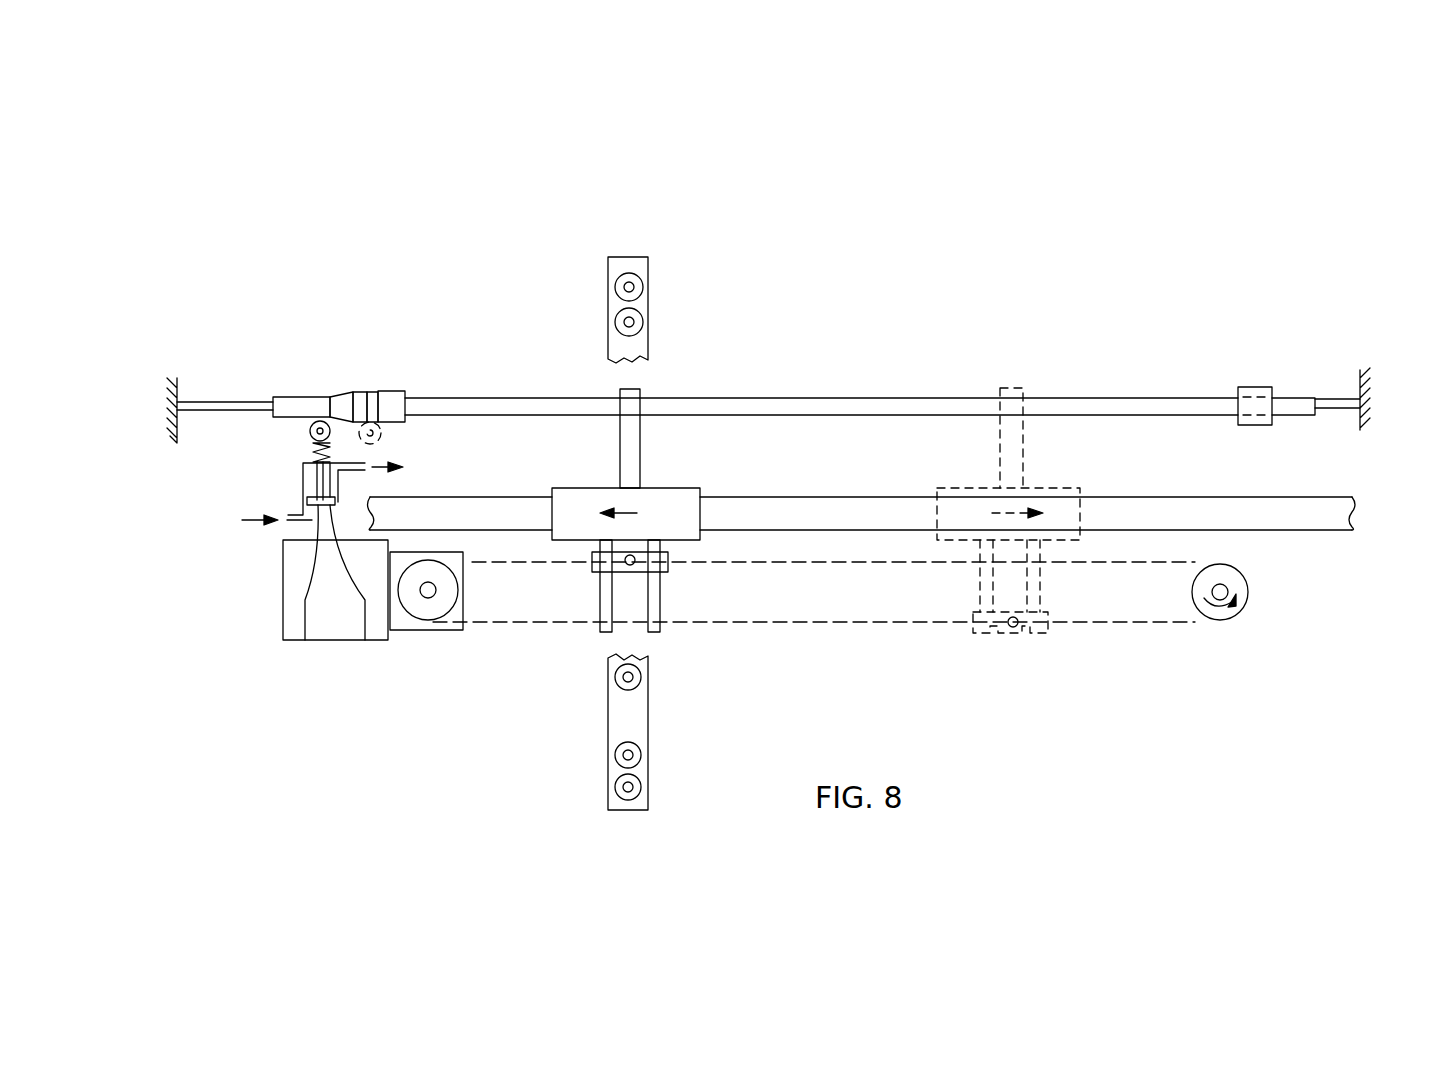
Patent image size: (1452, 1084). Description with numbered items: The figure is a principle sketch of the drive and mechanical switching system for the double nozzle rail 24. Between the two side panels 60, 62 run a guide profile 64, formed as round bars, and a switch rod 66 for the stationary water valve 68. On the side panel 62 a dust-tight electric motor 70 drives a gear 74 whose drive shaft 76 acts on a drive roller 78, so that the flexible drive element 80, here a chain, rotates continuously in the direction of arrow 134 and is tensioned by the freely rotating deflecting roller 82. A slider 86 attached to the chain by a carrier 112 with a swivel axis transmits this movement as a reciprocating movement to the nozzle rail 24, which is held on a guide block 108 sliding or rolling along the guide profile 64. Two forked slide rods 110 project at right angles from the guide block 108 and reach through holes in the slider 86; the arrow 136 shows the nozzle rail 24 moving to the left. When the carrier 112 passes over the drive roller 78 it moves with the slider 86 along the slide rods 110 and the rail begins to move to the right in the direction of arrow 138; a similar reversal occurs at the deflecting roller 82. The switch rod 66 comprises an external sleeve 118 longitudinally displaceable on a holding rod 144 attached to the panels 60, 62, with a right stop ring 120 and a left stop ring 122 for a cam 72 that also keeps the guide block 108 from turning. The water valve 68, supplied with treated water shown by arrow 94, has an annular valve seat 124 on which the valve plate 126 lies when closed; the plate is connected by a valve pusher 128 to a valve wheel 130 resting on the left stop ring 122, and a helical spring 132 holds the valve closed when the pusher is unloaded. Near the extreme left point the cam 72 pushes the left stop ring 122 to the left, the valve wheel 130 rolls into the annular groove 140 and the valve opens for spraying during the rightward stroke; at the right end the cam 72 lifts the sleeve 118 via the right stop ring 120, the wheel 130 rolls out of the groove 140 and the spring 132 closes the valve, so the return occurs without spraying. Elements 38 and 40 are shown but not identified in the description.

The nozzle rail 24 is at (642, 265).
The sensor 38 is at (641, 755).
The sensor 40 is at (641, 787).
The side panel 60 is at (1365, 400).
The side panel 62 is at (177, 420).
The guide profile 64 is at (1308, 517).
The switch rod 66 is at (833, 368).
The water valve 68 is at (312, 520).
The electric motor 70 is at (287, 622).
The cam 72 is at (625, 440).
The gear 74 is at (455, 610).
The drive shaft 76 is at (427, 600).
The drive roller 78 is at (433, 612).
The flexible drive element 80 is at (805, 622).
The deflecting roller 82 is at (1237, 608).
The slider 86 is at (657, 572).
The arrow 94 is at (242, 520).
The guide block 108 is at (687, 527).
The forked slide rods 110 is at (602, 627).
The carrier 112 is at (630, 555).
The external sleeve 118 is at (882, 405).
The right stop ring 120 is at (1258, 390).
The left stop ring 122 is at (395, 400).
The annular valve seat 124 is at (365, 640).
The valve plate 126 is at (305, 640).
The valve pusher 128 is at (320, 483).
The valve wheel 130 is at (308, 424).
The helical spring 132 is at (310, 450).
The arrow 134 is at (1215, 605).
The arrow 136 is at (623, 507).
The arrow 138 is at (992, 508).
The annular groove 140 is at (373, 423).
The holding rod 144 is at (1332, 400).